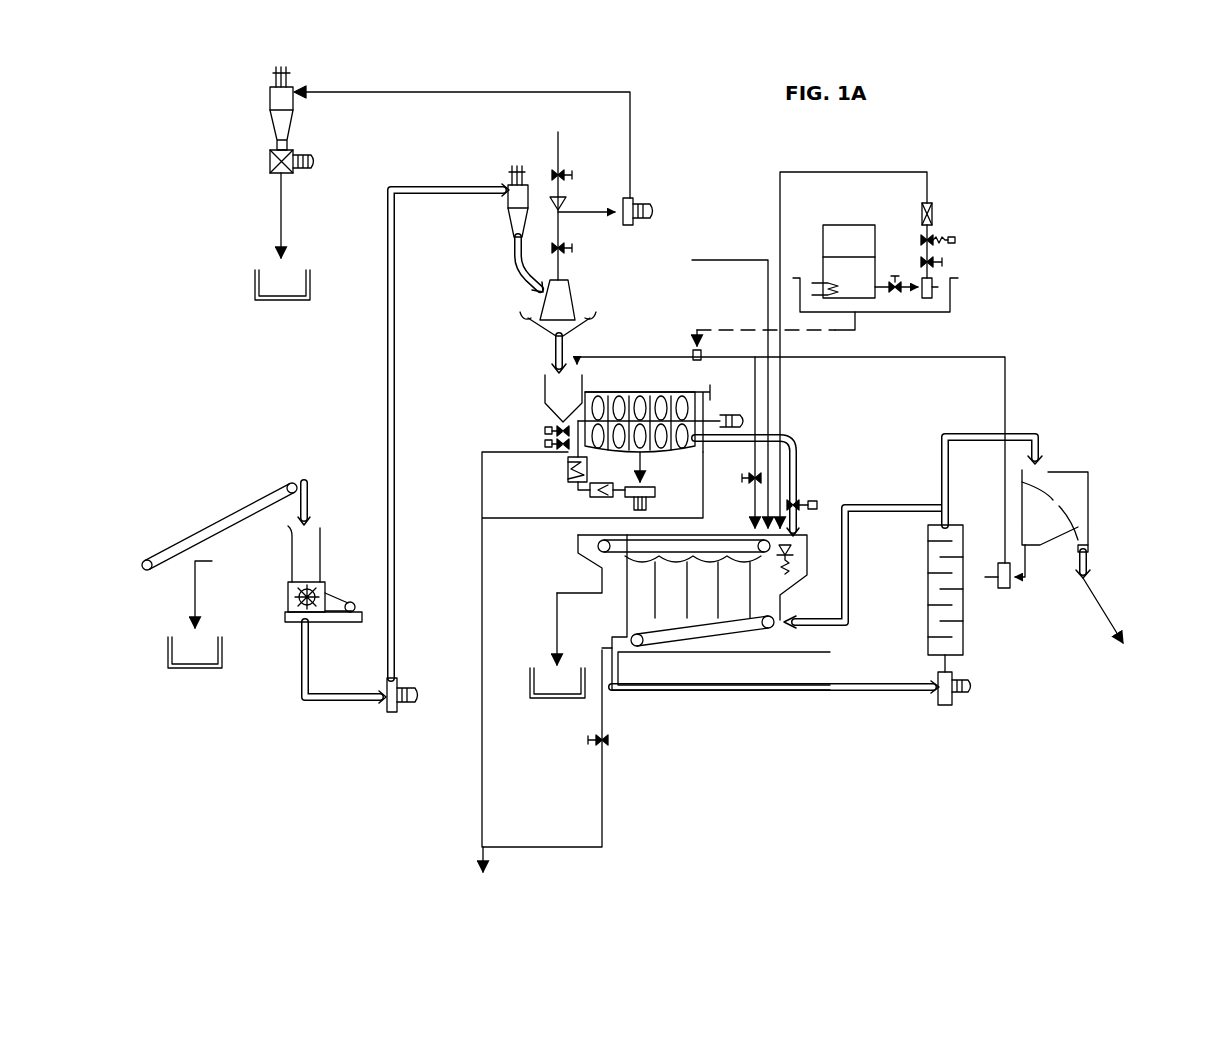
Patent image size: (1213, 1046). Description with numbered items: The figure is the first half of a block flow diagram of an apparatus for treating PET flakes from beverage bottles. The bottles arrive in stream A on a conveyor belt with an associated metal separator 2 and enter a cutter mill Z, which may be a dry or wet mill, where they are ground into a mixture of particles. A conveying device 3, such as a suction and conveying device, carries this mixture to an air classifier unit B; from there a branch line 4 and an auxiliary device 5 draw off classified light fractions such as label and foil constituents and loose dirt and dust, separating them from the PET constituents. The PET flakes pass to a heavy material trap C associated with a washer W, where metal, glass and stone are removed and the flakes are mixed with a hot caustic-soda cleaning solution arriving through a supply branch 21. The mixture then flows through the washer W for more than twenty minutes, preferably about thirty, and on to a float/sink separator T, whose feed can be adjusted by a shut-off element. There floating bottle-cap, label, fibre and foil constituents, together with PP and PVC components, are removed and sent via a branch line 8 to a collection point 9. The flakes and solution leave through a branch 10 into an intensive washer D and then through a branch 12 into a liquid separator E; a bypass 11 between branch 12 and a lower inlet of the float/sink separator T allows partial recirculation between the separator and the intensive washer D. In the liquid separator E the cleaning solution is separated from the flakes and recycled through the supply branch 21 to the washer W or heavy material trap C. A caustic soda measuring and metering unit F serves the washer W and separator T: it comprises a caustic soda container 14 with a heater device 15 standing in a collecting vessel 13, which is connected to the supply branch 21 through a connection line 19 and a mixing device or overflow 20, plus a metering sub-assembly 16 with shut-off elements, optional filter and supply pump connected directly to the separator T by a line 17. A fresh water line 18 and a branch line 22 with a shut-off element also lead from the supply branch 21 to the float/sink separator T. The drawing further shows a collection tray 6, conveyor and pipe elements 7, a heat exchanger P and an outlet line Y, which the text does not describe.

The metal separator 2 is at (190, 656).
The conveying device 3 is at (400, 537).
The branch line 4 is at (467, 92).
The auxiliary device 5 is at (290, 118).
The collection tray 6 is at (262, 285).
The conveyor / pipe 7 is at (242, 508).
The branch line 8 is at (582, 596).
The collection point 9 is at (536, 686).
The branch 10 is at (866, 684).
The bypass 11 is at (896, 515).
The branch 12 is at (985, 432).
The collecting vessel 13 is at (955, 300).
The caustic soda container 14 is at (823, 240).
The heater device 15 is at (822, 282).
The metering sub-assembly 16 is at (910, 255).
The line 17 is at (853, 172).
The fresh water line 18 is at (750, 258).
The connection line 19 is at (838, 331).
The mixing device or overflow 20 is at (694, 346).
The supply branch 21 is at (890, 360).
The branch line 22 is at (757, 456).
The stream A is at (312, 491).
The air classifier unit B is at (518, 320).
The heavy material trap C is at (532, 393).
The intensive washer D is at (924, 580).
The liquid separator E is at (1076, 458).
The caustic soda measuring and metering unit F is at (952, 204).
The heat exchanger P is at (563, 491).
The float/sink separator T is at (570, 573).
The washer W is at (636, 384).
The outlet line Y is at (483, 780).
The cutter mill Z is at (282, 630).